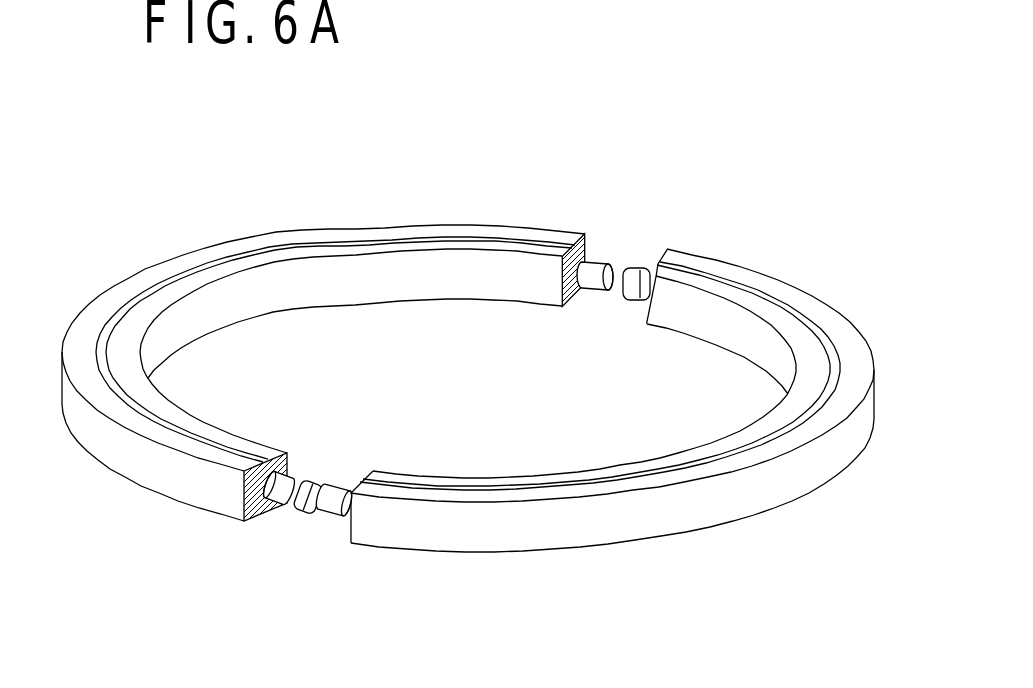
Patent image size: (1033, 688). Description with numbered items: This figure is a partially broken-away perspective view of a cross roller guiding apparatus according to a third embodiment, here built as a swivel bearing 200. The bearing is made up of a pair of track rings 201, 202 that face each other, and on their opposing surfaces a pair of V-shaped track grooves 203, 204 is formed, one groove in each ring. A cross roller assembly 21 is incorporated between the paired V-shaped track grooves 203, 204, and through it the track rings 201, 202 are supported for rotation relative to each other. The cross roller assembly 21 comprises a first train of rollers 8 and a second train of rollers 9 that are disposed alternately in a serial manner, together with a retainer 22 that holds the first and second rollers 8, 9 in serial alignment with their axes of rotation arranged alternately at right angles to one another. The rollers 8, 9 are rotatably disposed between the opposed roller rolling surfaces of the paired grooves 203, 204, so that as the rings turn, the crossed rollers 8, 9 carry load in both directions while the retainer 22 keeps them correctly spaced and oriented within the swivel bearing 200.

The split ring assembly 200 is at (728, 166).
The track ring 201 is at (442, 290).
The track ring 202 is at (734, 270).
The V-shaped track groove 203 is at (566, 280).
The V-shaped track groove 204 is at (260, 522).
The first train of rollers 8 is at (600, 262).
The second train of rollers 9 is at (633, 303).
The retainer 22 is at (308, 478).
The cross roller assembly 21 is at (303, 524).